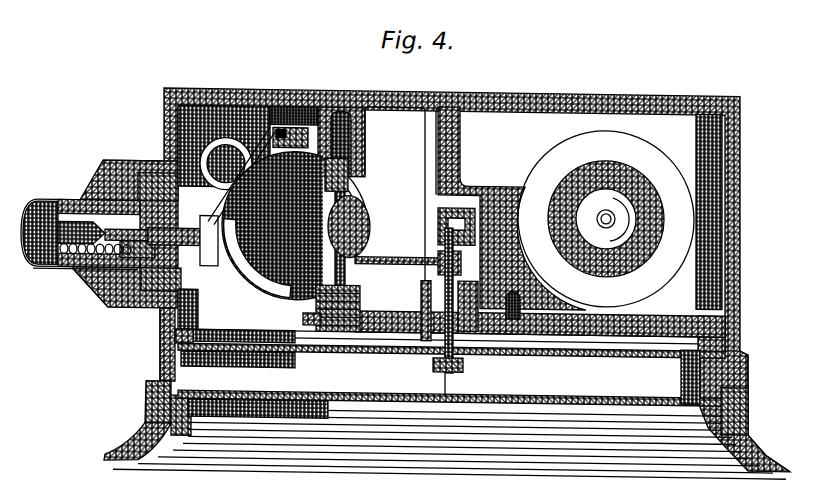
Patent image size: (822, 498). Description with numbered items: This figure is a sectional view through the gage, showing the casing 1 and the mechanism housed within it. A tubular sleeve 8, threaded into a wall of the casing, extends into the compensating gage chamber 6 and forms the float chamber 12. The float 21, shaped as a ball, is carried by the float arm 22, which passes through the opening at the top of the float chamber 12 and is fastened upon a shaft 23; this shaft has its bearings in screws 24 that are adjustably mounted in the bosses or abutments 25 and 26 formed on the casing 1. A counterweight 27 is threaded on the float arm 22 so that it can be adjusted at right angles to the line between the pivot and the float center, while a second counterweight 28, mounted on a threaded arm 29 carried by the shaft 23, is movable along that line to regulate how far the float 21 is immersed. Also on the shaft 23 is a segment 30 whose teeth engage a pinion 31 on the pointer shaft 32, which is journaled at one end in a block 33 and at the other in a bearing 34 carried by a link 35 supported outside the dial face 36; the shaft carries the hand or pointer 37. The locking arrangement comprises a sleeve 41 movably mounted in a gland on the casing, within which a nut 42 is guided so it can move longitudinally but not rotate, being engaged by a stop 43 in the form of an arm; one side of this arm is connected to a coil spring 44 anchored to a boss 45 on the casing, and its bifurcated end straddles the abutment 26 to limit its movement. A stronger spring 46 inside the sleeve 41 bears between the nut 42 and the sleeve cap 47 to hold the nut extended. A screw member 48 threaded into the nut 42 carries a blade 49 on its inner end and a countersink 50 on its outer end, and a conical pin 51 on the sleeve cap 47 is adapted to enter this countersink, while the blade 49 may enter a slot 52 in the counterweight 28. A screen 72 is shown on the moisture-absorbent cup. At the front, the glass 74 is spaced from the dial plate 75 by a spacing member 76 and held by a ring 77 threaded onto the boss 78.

The casing 1 is at (568, 96).
The compensating gage chamber 6 is at (533, 175).
The tubular sleeve 8 is at (591, 194).
The float chamber 12 is at (576, 166).
The float 21 is at (606, 192).
The float arm 22 is at (367, 190).
The shaft 23 is at (358, 271).
The screws 24 is at (362, 157).
The boss or abutment 25 is at (350, 153).
The boss or abutment 26 is at (350, 297).
The counterweight 27 is at (348, 208).
The second counterweight 28 is at (297, 322).
The threaded arm 29 is at (296, 243).
The segment 30 is at (390, 257).
The pinion 31 is at (433, 260).
The pointer shaft 32 is at (437, 243).
The block 33 is at (443, 200).
The bearing 34 is at (450, 367).
The link 35 is at (428, 363).
The dial face 36 is at (290, 333).
The hand or pointer 37 is at (490, 359).
The sleeve 41 is at (68, 194).
The nut 42 is at (102, 288).
The stop 43 is at (242, 230).
The spring 44 is at (222, 130).
The boss 45 is at (276, 105).
The spring 46 is at (92, 262).
The sleeve cap 47 is at (40, 261).
The screw member 48 is at (100, 280).
The blade 49 is at (143, 318).
The countersink 50 is at (117, 160).
The conical pin 51 is at (73, 263).
The slot 52 is at (187, 285).
The screen 72 is at (262, 130).
The glass 74 is at (307, 392).
The dial plate 75 is at (728, 387).
The spacing member 76 is at (710, 380).
The ring 77 is at (740, 410).
The threaded boss 78 is at (722, 392).